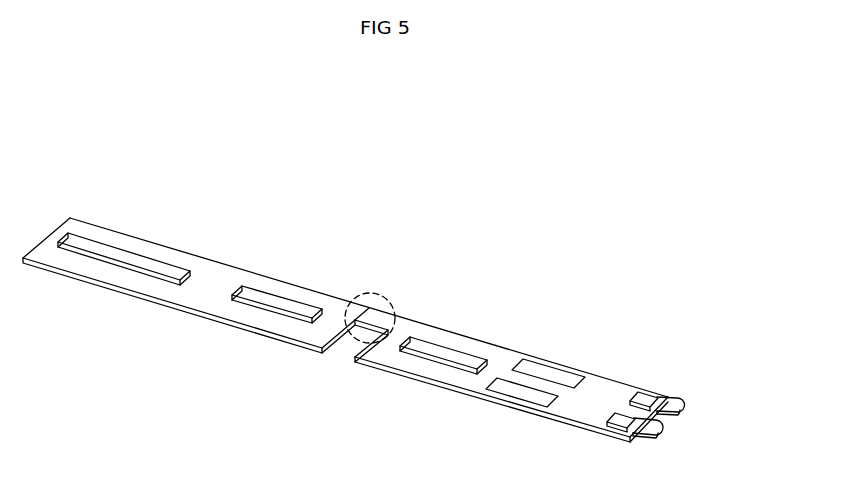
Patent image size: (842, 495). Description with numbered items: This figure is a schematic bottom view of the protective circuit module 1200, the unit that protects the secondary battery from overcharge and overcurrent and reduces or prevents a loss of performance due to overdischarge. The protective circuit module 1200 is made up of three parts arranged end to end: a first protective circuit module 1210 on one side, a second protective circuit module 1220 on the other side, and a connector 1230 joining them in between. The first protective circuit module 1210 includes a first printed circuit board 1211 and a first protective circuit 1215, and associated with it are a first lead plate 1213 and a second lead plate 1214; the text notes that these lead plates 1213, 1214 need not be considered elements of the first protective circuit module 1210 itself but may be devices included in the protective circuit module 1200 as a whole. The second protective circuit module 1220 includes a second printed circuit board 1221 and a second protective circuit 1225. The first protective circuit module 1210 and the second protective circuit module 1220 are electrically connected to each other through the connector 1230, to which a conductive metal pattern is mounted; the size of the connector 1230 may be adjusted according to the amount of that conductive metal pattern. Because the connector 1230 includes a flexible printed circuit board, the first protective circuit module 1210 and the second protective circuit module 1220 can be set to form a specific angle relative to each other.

The protective circuit module 1200 is at (696, 212).
The first protective circuit module 1210 is at (589, 340).
The first printed circuit board 1211 is at (616, 390).
The first lead plate 1213 is at (688, 404).
The second lead plate 1214 is at (501, 397).
The first protective circuit 1215 is at (433, 346).
The second protective circuit module 1220 is at (229, 229).
The second printed circuit board 1221 is at (273, 289).
The second protective circuit 1225 is at (233, 294).
The connector 1230 is at (372, 294).